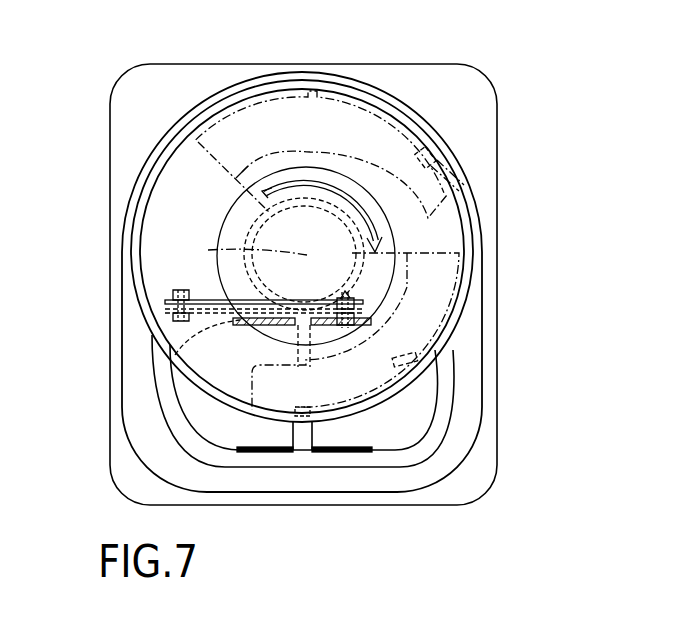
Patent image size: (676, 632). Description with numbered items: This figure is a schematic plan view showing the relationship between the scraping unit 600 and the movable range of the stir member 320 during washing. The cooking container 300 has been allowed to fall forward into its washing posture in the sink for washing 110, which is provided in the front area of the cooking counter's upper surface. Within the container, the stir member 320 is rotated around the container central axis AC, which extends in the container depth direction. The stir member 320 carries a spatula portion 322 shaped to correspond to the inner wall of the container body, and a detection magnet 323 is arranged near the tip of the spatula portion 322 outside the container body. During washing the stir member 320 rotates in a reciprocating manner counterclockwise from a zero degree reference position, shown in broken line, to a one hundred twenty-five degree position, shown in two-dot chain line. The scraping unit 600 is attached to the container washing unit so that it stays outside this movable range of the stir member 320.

The sink for washing 110 is at (145, 175).
The cooking container 300 is at (132, 250).
The stir member 320 is at (315, 92).
The spatula portion 322 is at (387, 125).
The detection magnet 323 is at (303, 416).
The scraping unit 600 is at (205, 315).
The container central axis AC is at (286, 256).